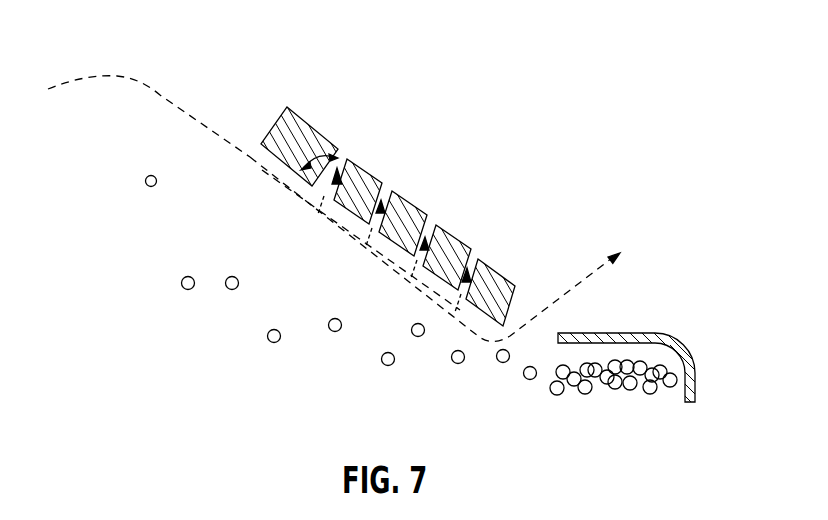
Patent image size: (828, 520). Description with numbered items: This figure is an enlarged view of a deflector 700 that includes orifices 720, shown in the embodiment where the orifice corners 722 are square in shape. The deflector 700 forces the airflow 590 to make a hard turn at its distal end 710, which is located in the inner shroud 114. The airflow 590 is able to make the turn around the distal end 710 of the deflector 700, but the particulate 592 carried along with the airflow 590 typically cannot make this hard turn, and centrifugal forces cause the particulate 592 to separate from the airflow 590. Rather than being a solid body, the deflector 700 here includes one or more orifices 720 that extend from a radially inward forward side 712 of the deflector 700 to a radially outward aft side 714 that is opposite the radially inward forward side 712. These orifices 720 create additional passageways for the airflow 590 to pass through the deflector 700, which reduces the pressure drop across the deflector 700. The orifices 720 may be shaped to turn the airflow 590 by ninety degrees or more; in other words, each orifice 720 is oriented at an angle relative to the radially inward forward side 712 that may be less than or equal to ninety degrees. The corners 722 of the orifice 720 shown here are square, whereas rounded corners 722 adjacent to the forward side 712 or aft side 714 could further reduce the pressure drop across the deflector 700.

The airflow 590 is at (117, 74).
The particulate 592 is at (147, 176).
The radially inward forward side 712 is at (262, 148).
The corners 722 is at (373, 220).
The deflector 700 is at (400, 207).
The distal end 710 is at (503, 284).
The radially outward aft side 714 is at (345, 166).
The orifice 720 is at (424, 178).
The inner shroud 114 is at (630, 193).